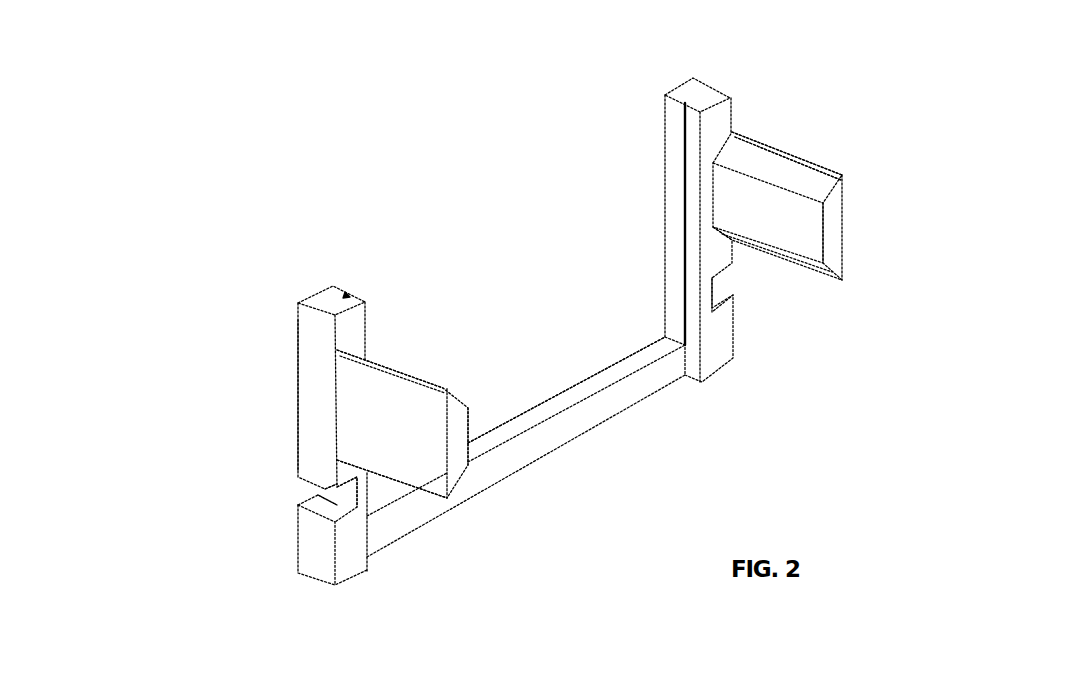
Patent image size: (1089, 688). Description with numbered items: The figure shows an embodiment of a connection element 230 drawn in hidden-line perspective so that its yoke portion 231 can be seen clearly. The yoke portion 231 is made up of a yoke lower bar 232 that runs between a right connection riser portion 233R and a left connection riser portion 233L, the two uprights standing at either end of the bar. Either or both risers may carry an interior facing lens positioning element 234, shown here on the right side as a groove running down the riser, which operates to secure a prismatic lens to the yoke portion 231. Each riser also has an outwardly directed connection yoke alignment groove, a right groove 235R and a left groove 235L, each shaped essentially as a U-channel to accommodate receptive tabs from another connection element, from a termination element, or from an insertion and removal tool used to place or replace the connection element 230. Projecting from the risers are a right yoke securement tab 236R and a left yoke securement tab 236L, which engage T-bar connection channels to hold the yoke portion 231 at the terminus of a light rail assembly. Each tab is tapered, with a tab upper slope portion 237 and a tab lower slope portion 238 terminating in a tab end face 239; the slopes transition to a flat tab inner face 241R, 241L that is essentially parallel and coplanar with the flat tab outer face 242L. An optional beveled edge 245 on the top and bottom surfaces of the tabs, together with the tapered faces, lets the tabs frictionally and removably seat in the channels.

The connection element 230 is at (314, 152).
The yoke portion 231 is at (672, 276).
The yoke lower bar 232 is at (572, 427).
The left connection riser portion 233L is at (322, 340).
The right connection riser portion 233R is at (697, 95).
The interior facing lens positioning element 234 is at (345, 294).
The left connection yoke alignment groove 235L is at (346, 494).
The right connection yoke alignment groove 235R is at (728, 290).
The left yoke securement tab 236L is at (420, 435).
The right yoke securement tab 236R is at (958, 120).
The tab upper slope portion 237 is at (797, 175).
The tab lower slope portion 238 is at (795, 262).
The tab end face 239 is at (833, 222).
The flat tab inner face 241L is at (473, 432).
The flat tab inner face 241R is at (803, 238).
The flat tab outer face 242L is at (319, 437).
The beveled edge 245 is at (410, 384).